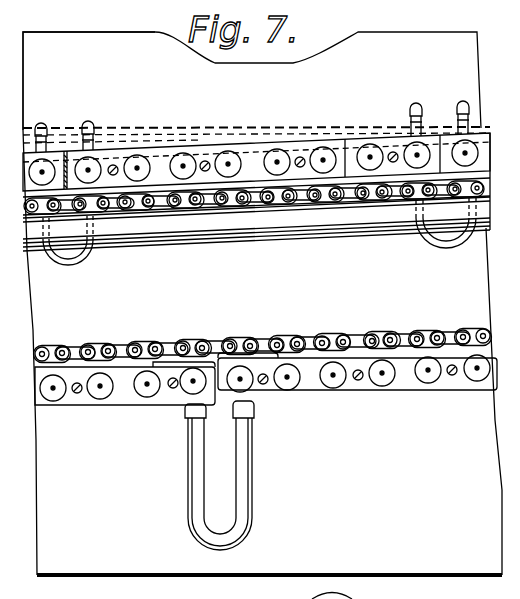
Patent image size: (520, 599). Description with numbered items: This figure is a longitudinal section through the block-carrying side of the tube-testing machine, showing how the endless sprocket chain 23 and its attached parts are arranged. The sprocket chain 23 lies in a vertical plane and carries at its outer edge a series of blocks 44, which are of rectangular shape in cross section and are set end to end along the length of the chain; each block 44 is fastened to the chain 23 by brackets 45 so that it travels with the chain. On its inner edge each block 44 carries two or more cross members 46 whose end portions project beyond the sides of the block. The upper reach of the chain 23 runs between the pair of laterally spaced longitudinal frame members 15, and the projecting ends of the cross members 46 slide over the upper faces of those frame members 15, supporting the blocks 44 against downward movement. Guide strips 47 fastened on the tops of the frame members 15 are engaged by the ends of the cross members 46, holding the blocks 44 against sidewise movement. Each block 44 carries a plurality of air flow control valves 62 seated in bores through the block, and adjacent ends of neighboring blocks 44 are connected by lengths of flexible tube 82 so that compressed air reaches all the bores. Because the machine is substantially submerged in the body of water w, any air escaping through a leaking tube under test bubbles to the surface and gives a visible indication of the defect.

The body of water w is at (66, 128).
The air flow control valve 62 is at (178, 160).
The block 44 is at (258, 147).
The guide strip 47 is at (345, 140).
The longitudinally extending frame member 15 is at (153, 244).
The bracket 45 is at (273, 215).
The flexible tube 82 is at (67, 262).
The endless sprocket chain 23 is at (397, 210).
The cross member 46 is at (248, 356).